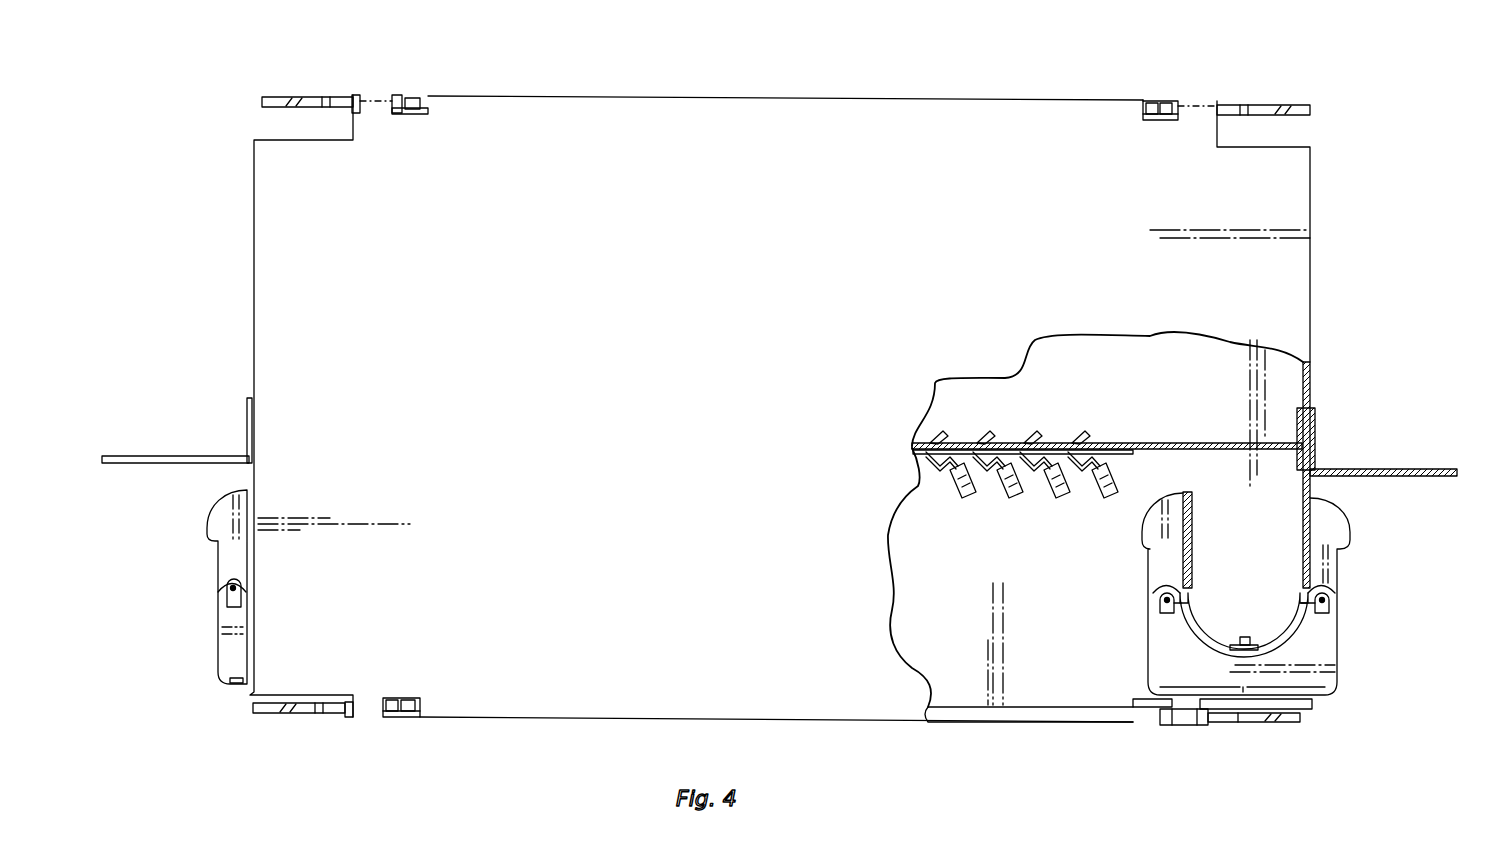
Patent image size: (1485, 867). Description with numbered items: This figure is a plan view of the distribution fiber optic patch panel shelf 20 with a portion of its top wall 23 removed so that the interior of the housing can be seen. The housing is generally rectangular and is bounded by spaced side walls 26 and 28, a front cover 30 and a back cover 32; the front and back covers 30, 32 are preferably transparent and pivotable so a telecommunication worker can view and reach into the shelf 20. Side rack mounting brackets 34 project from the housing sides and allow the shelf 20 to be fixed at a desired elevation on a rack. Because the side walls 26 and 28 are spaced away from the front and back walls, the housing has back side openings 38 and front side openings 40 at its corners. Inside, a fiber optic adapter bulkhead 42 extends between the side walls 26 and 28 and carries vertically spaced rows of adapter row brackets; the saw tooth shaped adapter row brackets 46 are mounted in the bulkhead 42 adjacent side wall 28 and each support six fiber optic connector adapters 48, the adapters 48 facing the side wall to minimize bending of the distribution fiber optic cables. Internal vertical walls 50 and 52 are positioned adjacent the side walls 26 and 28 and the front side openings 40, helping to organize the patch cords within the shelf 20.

The fiber optic patch panel shelf 20 is at (810, 70).
The top wall 23 is at (677, 434).
The side wall 26 is at (252, 253).
The side wall 28 is at (1312, 378).
The front cover 30 is at (405, 718).
The back cover 32 is at (1157, 98).
The side rack mounting brackets 34 is at (188, 455).
The back side openings 38 is at (283, 117).
The front side openings 40 is at (1300, 597).
The fiber optic adapter bulkhead 42 is at (1225, 445).
The adapter row brackets 46 is at (1120, 443).
The fiber optic connector adapters 48 is at (1048, 495).
The internal vertical wall 50 is at (1195, 540).
The internal vertical wall 52 is at (1258, 638).